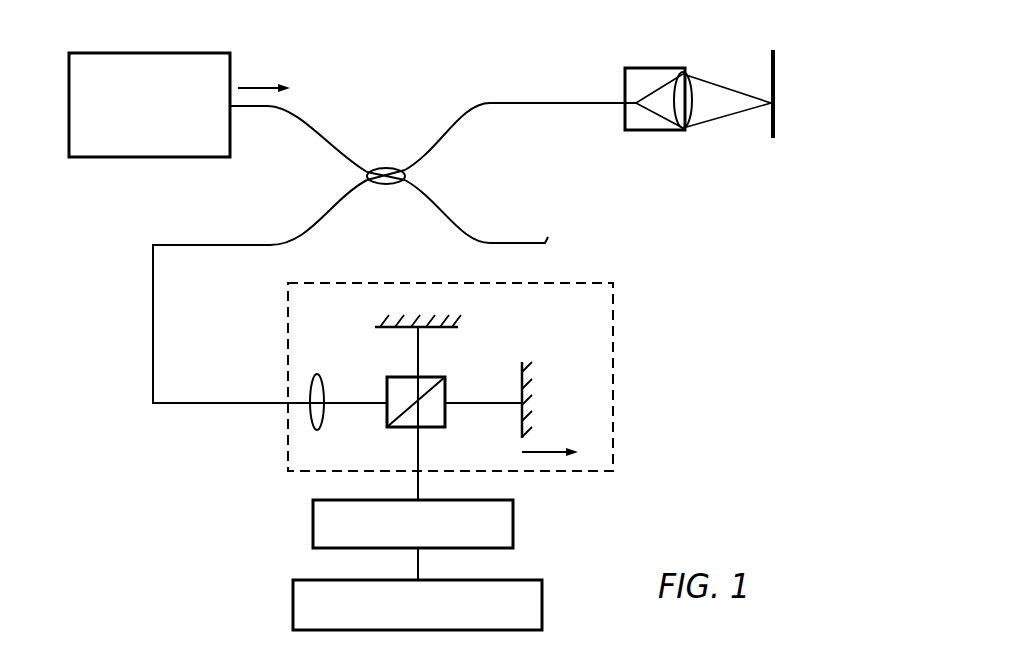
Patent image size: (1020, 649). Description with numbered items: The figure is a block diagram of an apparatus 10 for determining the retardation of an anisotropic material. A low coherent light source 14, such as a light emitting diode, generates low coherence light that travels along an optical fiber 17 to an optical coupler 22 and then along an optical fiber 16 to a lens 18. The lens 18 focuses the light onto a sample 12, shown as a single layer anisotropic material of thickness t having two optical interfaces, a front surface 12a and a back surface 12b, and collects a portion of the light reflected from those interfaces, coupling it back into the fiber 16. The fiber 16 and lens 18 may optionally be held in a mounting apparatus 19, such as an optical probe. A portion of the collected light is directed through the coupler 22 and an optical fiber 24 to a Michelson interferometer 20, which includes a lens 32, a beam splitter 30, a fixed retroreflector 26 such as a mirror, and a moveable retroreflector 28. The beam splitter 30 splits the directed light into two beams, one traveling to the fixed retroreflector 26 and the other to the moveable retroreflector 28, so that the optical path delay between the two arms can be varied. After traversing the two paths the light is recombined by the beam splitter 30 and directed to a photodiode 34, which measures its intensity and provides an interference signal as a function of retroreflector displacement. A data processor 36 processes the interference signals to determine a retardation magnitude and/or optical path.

The apparatus 10 is at (101, 45).
The low coherent light source 14 is at (133, 159).
The optical fiber 17 is at (320, 122).
The optical coupler 22 is at (383, 166).
The optical fiber 16 is at (527, 101).
The mounting apparatus 19 is at (645, 68).
The lens 18 is at (689, 78).
The sample 12 is at (781, 53).
The front surface 12a is at (773, 130).
The back surface 12b is at (777, 110).
The optical fiber 24 is at (153, 290).
The Michelson interferometer 20 is at (288, 438).
The lens 32 is at (311, 385).
The beam splitter 30 is at (400, 377).
The fixed retroreflector 26 is at (445, 330).
The moveable retroreflector 28 is at (520, 366).
The photodiode 34 is at (513, 523).
The data processor 36 is at (542, 603).